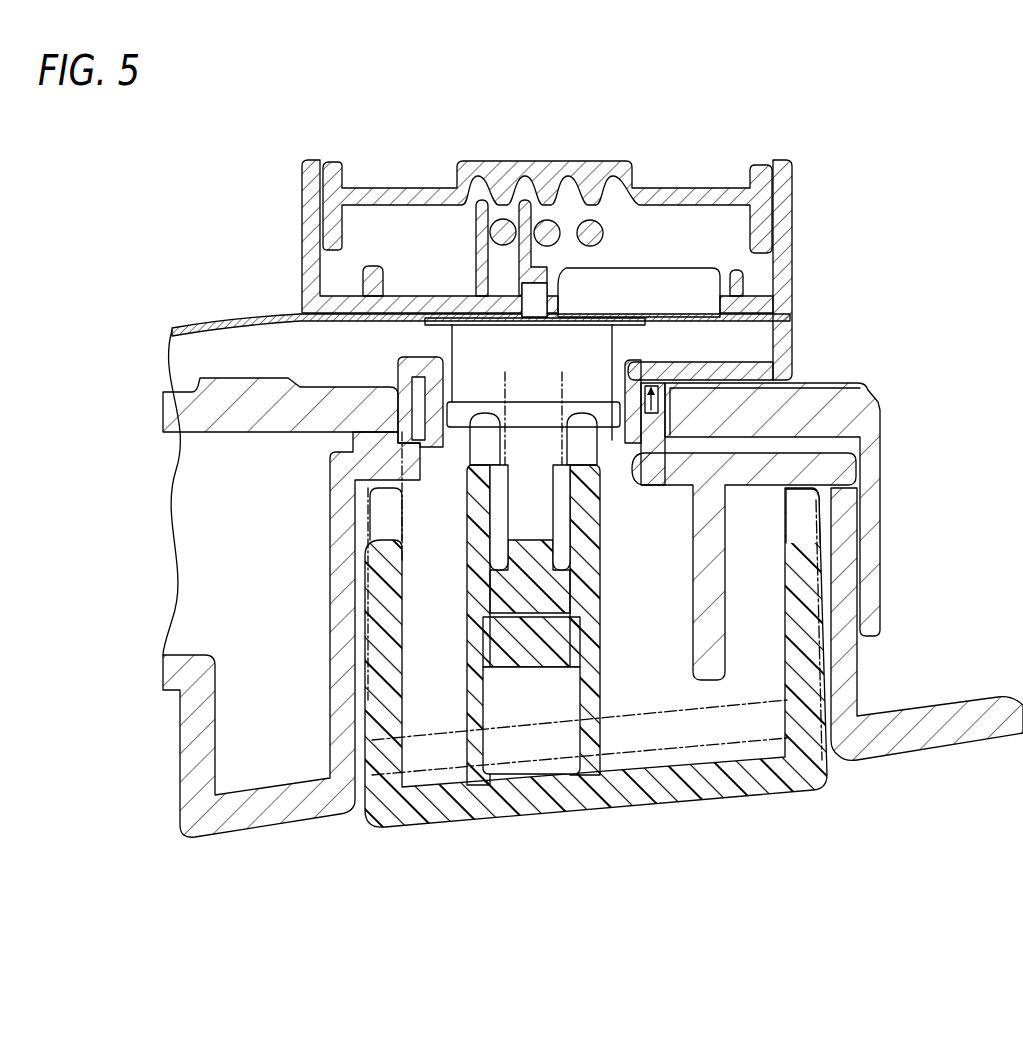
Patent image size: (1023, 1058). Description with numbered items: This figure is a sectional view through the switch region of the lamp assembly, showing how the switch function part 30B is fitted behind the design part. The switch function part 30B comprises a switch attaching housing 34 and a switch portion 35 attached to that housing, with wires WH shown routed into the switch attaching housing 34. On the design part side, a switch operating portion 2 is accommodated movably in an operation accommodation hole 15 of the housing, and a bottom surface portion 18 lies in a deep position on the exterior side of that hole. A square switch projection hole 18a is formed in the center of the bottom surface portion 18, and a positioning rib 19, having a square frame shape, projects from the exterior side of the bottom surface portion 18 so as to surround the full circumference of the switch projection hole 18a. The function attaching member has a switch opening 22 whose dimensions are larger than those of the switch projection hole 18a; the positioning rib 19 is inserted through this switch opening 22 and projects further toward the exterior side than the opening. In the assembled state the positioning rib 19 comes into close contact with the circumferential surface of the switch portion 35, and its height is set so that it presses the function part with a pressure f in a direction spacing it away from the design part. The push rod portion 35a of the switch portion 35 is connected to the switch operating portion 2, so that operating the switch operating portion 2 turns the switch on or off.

The switch attaching housing 34 is at (793, 268).
The switch function part 30B is at (612, 159).
The wire harness WH is at (585, 221).
The switch portion 35 is at (452, 308).
The push rod portion 35a is at (527, 460).
The switch opening 22 is at (780, 388).
The positioning rib 19 is at (652, 420).
The pressure f is at (648, 388).
The bottom surface portion 18 is at (775, 448).
The switch projection hole 18a is at (642, 513).
The operation accommodation hole 15 is at (820, 762).
The switch operating portion 2 is at (613, 800).